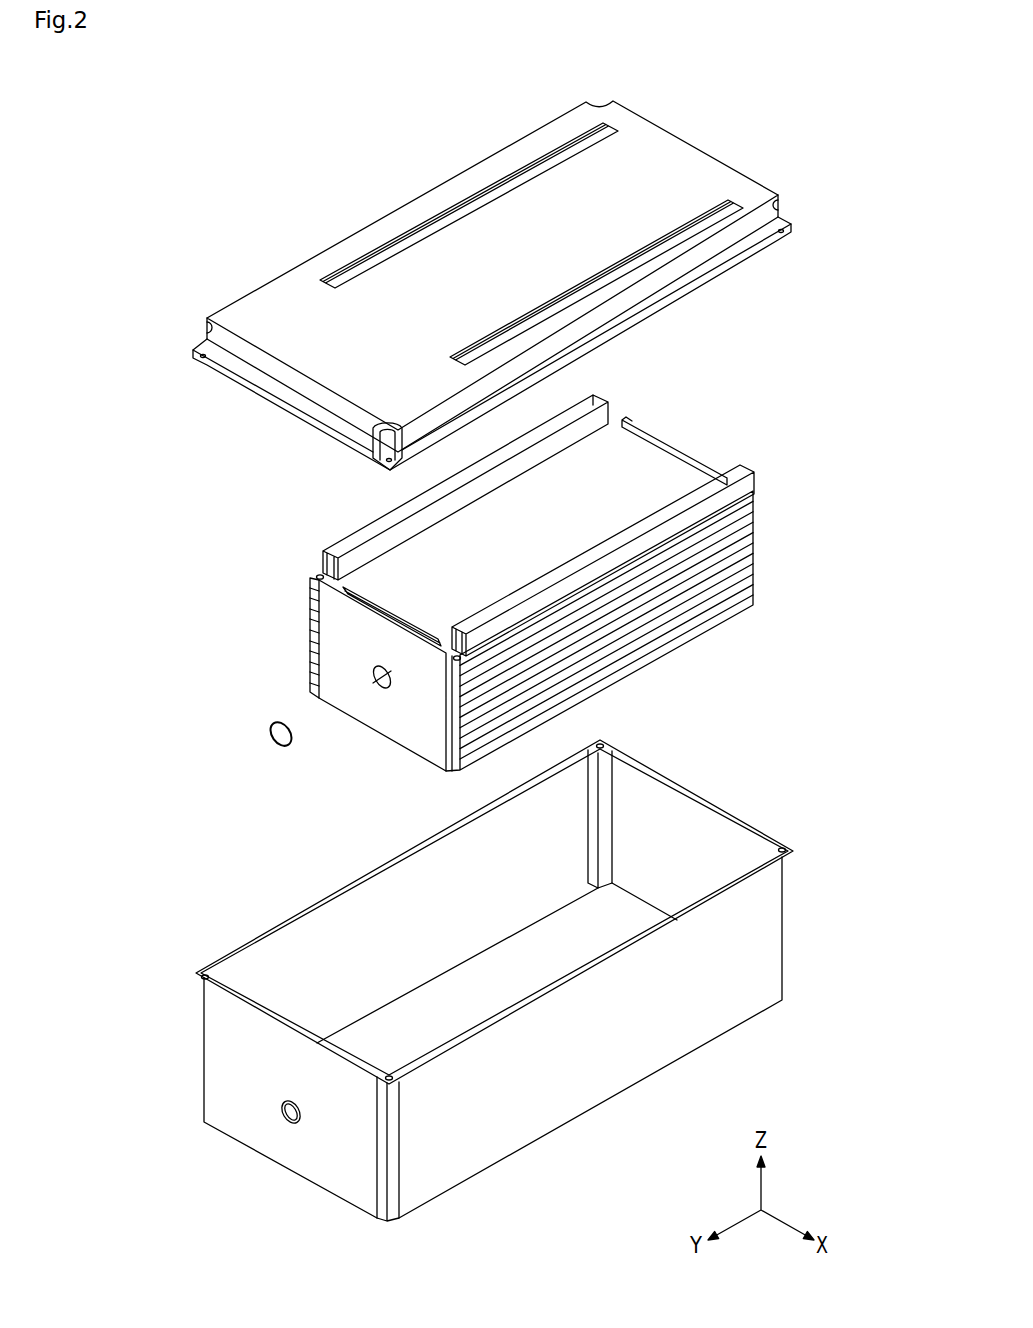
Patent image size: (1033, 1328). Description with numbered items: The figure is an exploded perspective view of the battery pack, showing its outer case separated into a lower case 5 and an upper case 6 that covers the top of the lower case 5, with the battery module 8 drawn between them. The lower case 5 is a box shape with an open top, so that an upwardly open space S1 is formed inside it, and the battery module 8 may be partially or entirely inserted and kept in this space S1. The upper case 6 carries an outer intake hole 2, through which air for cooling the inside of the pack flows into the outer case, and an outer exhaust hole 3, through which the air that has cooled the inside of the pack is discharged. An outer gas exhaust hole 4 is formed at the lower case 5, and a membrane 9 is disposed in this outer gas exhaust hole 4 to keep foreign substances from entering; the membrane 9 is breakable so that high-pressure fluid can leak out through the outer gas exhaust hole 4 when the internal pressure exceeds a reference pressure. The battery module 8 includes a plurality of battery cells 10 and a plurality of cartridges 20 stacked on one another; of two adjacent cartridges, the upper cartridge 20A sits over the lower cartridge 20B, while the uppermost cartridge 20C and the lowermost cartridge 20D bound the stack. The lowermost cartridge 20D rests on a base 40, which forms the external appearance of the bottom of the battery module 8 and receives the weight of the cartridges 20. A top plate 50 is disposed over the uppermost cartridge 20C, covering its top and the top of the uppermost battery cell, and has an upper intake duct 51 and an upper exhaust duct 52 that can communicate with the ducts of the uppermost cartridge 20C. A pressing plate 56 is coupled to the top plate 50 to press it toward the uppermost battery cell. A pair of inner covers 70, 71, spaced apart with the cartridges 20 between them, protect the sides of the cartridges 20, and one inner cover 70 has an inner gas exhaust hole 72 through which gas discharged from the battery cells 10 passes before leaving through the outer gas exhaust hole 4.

The outer intake hole 2 is at (443, 218).
The outer exhaust hole 3 is at (695, 221).
The outer gas exhaust hole 4 is at (288, 1124).
The lower case 5 is at (494, 980).
The upper case 6 is at (492, 272).
The battery module 8 is at (552, 577).
The membrane 9 is at (278, 747).
The battery cells 10 is at (372, 680).
The cartridges 20 is at (584, 628).
The upper cartridge 20A is at (755, 545).
The lower cartridge 20B is at (755, 553).
The uppermost cartridge 20C is at (750, 505).
The lowermost cartridge 20D is at (640, 666).
The base 40 is at (718, 617).
The top plate 50 is at (703, 520).
The upper intake duct 51 is at (350, 540).
The upper exhaust duct 52 is at (678, 505).
The pressing plate 56 is at (550, 555).
The inner cover 70 is at (337, 620).
The inner cover 71 is at (668, 440).
The inner gas exhaust hole 72 is at (378, 686).
The space S1 is at (467, 1019).